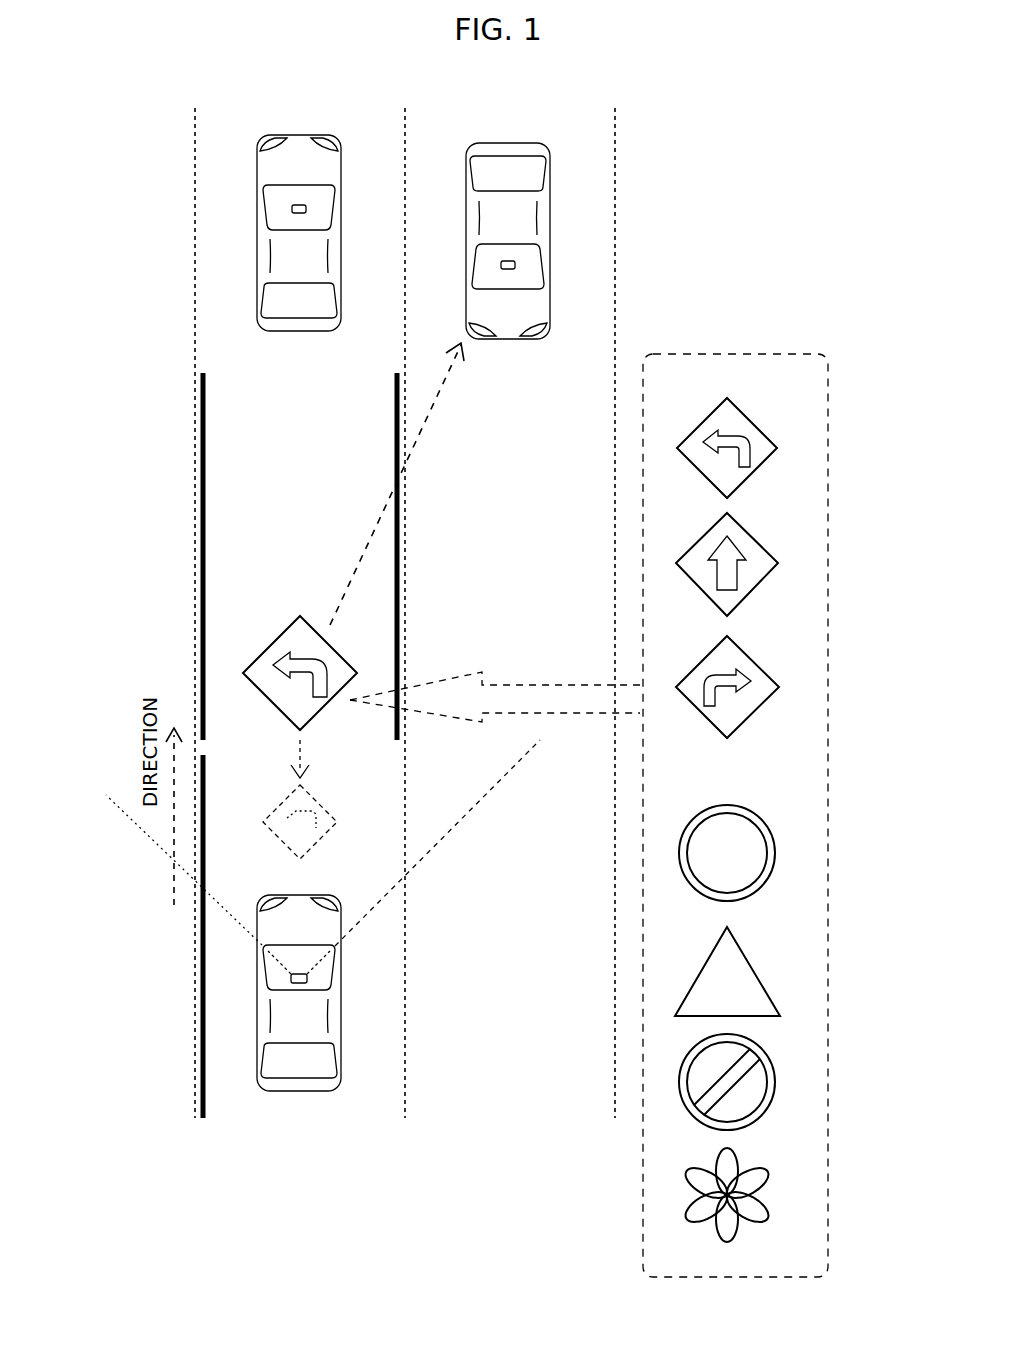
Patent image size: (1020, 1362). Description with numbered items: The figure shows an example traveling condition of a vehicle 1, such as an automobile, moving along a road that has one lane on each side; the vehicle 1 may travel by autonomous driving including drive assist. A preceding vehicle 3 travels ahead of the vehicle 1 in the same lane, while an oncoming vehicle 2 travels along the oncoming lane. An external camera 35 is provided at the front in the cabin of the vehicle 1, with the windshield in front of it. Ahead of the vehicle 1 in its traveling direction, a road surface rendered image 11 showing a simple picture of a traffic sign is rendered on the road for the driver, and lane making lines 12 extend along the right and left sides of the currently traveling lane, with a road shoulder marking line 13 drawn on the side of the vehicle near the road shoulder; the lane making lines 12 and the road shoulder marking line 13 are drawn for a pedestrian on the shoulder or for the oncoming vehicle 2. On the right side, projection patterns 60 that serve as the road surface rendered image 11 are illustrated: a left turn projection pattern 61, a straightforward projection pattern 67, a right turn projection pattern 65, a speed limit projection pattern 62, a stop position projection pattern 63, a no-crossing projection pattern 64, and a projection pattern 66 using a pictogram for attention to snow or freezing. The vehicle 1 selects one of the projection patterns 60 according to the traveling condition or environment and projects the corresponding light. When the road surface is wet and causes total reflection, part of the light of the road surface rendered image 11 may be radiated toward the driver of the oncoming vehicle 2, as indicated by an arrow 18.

The vehicle 1 is at (268, 1025).
The oncoming vehicle 2 is at (540, 215).
The preceding vehicle 3 is at (257, 222).
The road surface rendered image 11 is at (255, 668).
The lane making lines 12 is at (200, 545).
The road shoulder marking line 13 is at (200, 945).
The arrow 18 is at (437, 410).
The external camera 35 is at (332, 952).
The projection patterns 60 is at (783, 354).
The left turn projection pattern 61 is at (777, 450).
The speed limit projection pattern 62 is at (775, 858).
The stop position projection pattern 63 is at (748, 982).
The no-crossing projection pattern 64 is at (775, 1088).
The right turn projection pattern 65 is at (777, 690).
The projection pattern using a pictogram 66 is at (770, 1180).
The straightforward projection pattern 67 is at (777, 565).